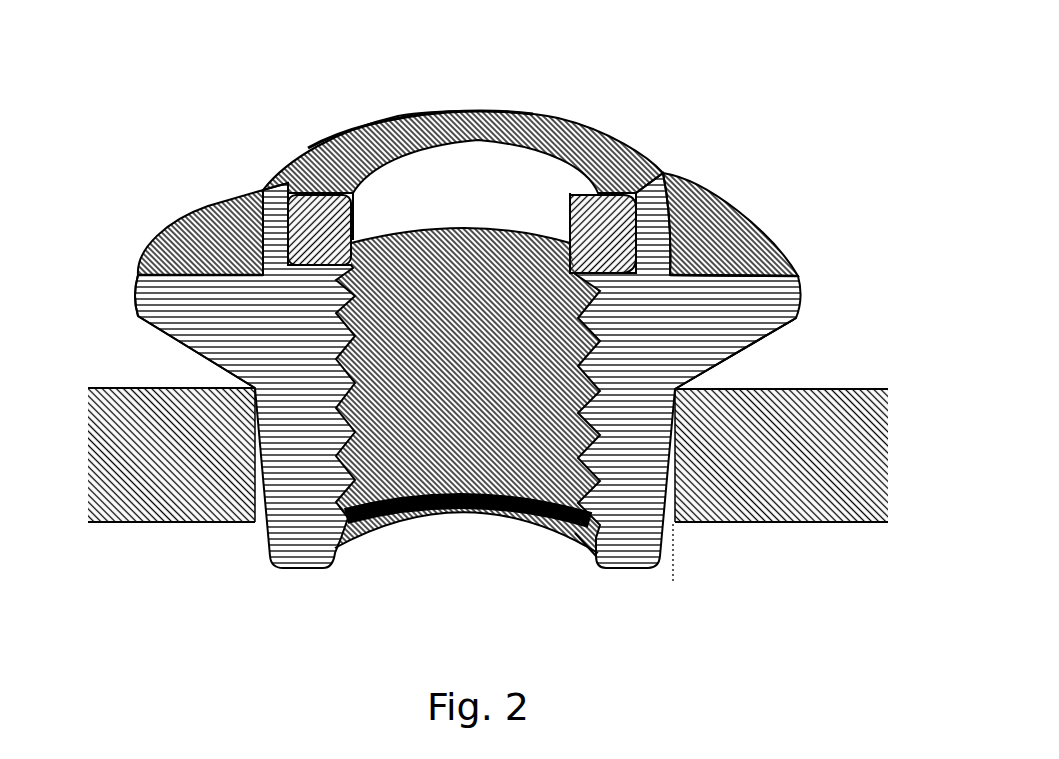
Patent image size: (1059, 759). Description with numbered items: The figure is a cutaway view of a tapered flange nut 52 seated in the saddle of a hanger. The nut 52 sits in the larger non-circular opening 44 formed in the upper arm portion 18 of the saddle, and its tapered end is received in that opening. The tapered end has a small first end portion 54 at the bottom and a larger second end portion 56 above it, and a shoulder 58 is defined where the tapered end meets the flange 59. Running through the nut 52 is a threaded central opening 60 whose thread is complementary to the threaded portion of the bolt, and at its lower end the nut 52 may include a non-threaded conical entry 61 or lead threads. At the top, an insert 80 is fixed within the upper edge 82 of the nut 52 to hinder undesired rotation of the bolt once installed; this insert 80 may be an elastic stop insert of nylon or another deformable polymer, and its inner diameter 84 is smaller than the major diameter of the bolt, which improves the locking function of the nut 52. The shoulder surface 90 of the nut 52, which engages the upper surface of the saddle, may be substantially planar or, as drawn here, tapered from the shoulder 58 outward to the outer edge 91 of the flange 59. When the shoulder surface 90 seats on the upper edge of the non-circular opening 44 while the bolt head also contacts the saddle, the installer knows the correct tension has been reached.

The upper arm portion 18 is at (148, 500).
The non-circular opening 44 is at (248, 508).
The nut 52 is at (430, 103).
The first end portion 54 is at (265, 552).
The second end portion 56 is at (668, 380).
The shoulder 58 is at (243, 378).
The flange 59 is at (130, 265).
The threaded central opening 60 is at (363, 517).
The non-threaded conical entry 61 is at (567, 532).
The insert 80 is at (612, 222).
The upper edge 82 is at (615, 150).
The inner diameter 84 is at (360, 117).
The shoulder surface 90 is at (150, 318).
The outer edge 91 is at (127, 282).